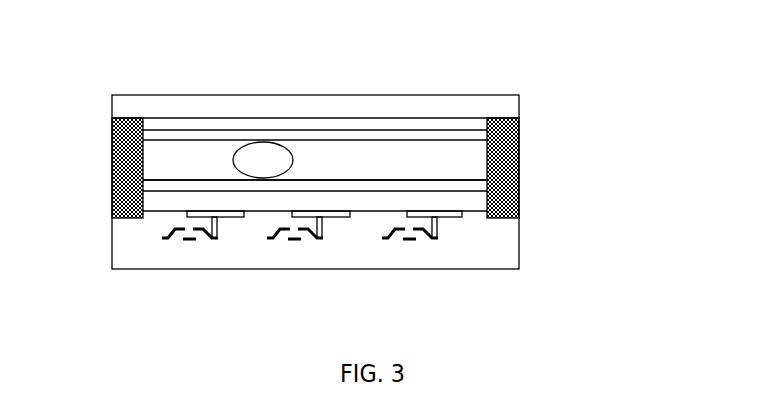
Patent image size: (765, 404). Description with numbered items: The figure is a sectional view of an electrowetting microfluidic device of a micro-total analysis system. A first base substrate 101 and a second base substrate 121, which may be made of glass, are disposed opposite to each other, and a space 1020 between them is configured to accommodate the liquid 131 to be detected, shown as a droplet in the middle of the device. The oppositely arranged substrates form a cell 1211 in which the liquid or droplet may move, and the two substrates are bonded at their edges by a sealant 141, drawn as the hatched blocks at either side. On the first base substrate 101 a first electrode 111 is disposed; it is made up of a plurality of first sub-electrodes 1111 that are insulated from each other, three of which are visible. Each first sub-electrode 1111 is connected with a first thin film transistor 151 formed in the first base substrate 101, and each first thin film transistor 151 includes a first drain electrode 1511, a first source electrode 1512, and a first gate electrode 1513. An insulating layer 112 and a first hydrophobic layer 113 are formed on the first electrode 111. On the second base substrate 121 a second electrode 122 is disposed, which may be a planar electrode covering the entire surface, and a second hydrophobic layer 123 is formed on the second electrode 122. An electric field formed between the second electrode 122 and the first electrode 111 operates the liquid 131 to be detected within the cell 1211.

The first base substrate 101 is at (502, 225).
The first electrode 111 is at (377, 275).
The first sub-electrode 1111 is at (568, 308).
The insulating layer 112 is at (478, 198).
The first hydrophobic layer 113 is at (477, 185).
The second base substrate 121 is at (412, 110).
The second electrode 122 is at (385, 125).
The second hydrophobic layer 123 is at (362, 137).
The cell 1211 is at (472, 153).
The space 1020 is at (162, 150).
The liquid to be detected 131 is at (256, 157).
The sealant 141 is at (519, 137).
The first thin film transistor 151 is at (300, 282).
The first drain electrode 1511 is at (214, 240).
The first source electrode 1512 is at (167, 242).
The first gate electrode 1513 is at (190, 242).